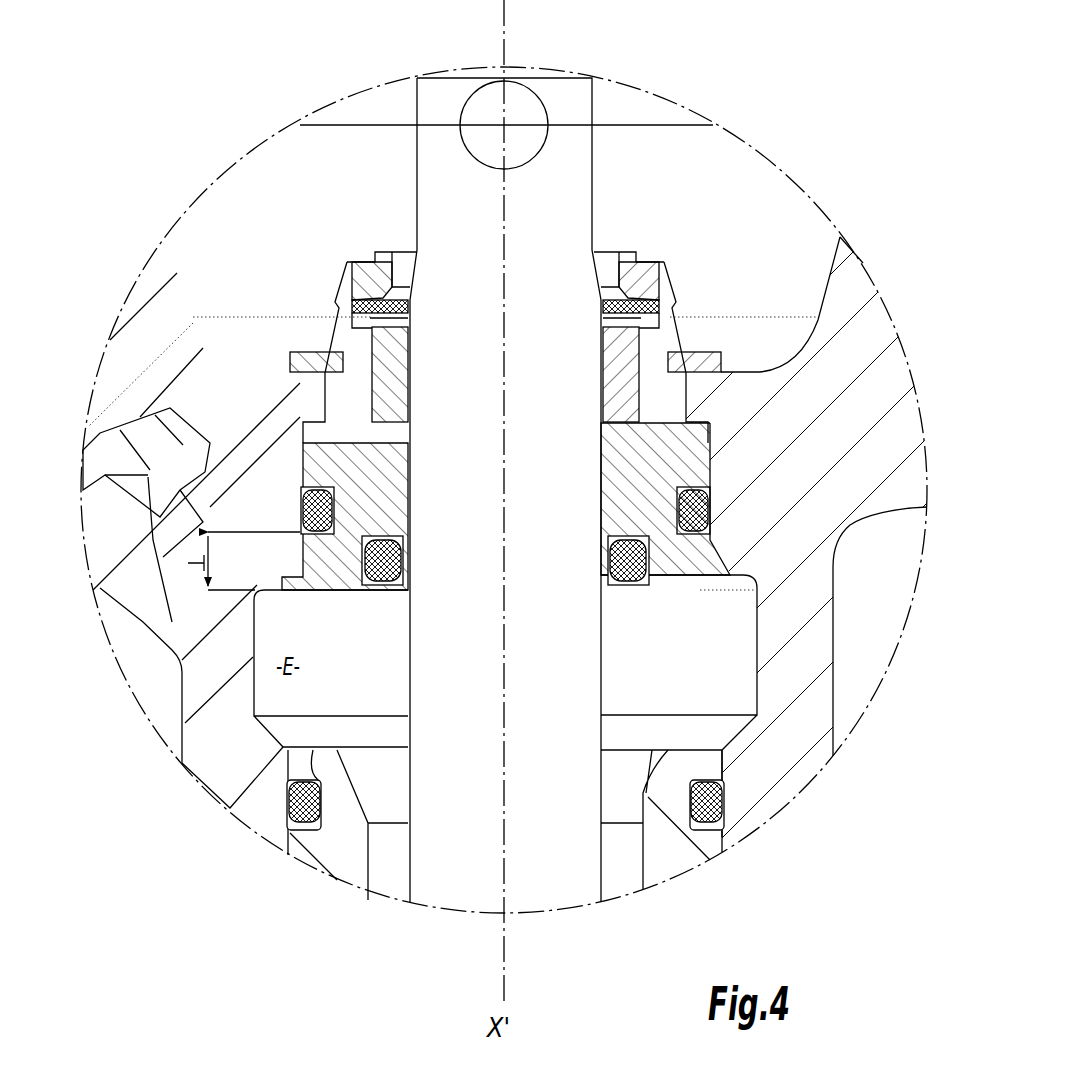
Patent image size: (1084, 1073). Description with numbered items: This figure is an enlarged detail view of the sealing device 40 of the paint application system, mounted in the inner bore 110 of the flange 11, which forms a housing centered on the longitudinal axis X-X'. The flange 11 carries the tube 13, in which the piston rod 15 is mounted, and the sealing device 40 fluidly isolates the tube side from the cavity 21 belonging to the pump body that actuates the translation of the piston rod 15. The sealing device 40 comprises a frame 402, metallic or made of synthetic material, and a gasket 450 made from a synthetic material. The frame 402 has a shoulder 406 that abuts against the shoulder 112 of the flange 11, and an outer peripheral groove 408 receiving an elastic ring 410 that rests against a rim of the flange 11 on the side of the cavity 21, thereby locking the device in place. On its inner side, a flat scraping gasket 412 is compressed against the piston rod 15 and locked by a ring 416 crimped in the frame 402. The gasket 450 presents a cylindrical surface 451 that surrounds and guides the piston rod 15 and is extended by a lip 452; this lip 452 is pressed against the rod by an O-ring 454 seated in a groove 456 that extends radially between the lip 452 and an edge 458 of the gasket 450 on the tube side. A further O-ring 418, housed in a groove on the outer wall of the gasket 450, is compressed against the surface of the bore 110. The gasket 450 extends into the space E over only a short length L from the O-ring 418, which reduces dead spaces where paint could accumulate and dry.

The flange 11 is at (880, 468).
The tube 13 is at (667, 857).
The piston rod 15 is at (463, 855).
The cavity 21 is at (716, 205).
The sealing device 40 is at (772, 327).
The inner bore 110 is at (363, 588).
The shoulder 112 is at (283, 372).
The frame 402 is at (665, 333).
The shoulder 406 is at (140, 428).
The outer peripheral groove 408 is at (305, 353).
The elastic ring 410 is at (290, 372).
The flat scraping gasket 412 is at (338, 300).
The ring 416 is at (386, 250).
The O-ring 418 is at (710, 505).
The gasket 450 is at (710, 462).
The cylindrical surface 451 is at (419, 501).
The lip 452 is at (600, 575).
The O-ring 454 is at (379, 536).
The groove 456 is at (633, 590).
The edge 458 is at (657, 570).